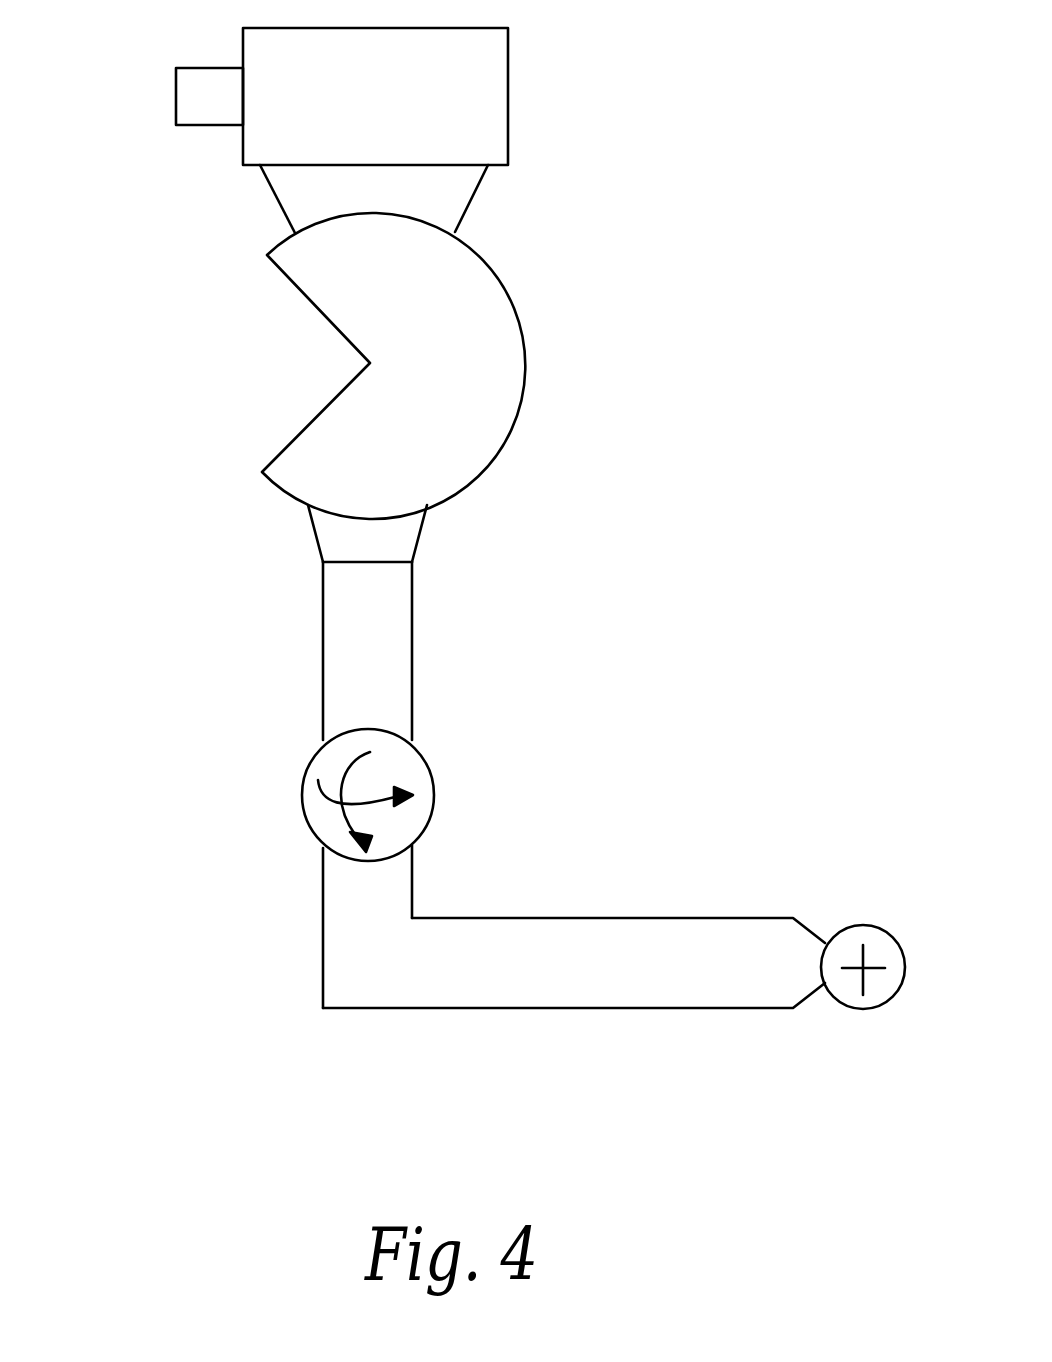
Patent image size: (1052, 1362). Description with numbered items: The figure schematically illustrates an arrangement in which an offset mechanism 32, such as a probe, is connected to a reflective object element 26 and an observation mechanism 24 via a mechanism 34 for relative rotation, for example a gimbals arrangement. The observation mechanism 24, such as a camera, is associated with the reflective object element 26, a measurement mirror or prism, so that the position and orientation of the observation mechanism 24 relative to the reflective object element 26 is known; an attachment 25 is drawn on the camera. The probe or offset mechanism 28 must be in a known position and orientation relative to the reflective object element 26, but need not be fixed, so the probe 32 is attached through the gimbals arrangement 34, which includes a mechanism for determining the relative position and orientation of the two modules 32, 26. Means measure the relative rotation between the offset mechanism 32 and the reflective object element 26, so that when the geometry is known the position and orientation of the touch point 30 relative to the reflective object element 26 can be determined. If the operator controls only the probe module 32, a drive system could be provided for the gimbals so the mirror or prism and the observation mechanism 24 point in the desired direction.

The observation mechanism 24 is at (510, 97).
The camera lens 25 is at (205, 68).
The reflective object element 26 is at (513, 312).
The offset mechanism 28 is at (412, 653).
The contact point 30 is at (863, 1010).
The offset mechanism 32 is at (613, 950).
The mechanism for relative rotation 34 is at (300, 790).